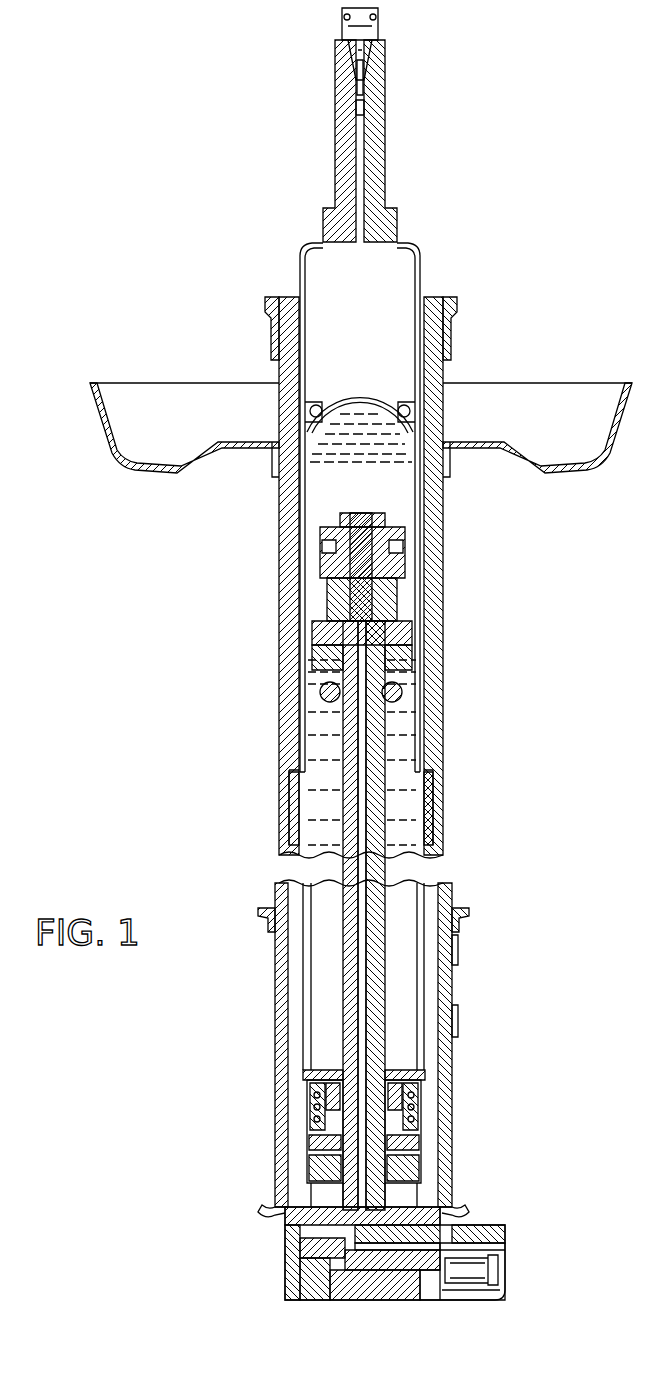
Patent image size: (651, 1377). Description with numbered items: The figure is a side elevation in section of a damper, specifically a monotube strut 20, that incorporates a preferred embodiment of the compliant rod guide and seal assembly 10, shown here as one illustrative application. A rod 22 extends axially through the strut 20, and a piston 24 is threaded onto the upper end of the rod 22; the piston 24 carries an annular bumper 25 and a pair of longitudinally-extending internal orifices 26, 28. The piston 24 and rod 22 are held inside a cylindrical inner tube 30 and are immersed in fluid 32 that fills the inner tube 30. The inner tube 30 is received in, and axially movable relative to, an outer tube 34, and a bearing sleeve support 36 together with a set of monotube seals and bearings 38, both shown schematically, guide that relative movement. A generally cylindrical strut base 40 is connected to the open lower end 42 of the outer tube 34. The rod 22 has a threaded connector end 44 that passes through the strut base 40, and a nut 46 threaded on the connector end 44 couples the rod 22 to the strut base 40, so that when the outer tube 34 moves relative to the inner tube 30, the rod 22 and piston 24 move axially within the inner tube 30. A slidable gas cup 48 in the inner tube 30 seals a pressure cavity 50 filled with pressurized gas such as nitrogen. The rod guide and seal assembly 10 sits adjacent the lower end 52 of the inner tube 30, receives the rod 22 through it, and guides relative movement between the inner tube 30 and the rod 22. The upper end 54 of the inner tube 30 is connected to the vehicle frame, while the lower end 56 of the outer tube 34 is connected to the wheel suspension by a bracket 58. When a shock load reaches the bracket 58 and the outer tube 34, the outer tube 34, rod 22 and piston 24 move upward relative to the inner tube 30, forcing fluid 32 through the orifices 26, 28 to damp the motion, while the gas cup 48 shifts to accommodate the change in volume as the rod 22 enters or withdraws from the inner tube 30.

The compliant rod guide and seal assembly 10 is at (281, 1097).
The monotube strut 20 is at (153, 700).
The rod 22 is at (350, 843).
The piston 24 is at (415, 598).
The annular bumper 25 is at (320, 692).
The internal orifice 26 is at (403, 523).
The internal orifice 28 is at (319, 523).
The inner tube 30 is at (445, 905).
The fluid 32 is at (405, 742).
The outer tube 34 is at (455, 932).
The bearing sleeve support 36 is at (436, 820).
The monotube seals and bearings 38 is at (430, 696).
The strut base 40 is at (313, 1212).
The open lower end 42 is at (427, 1196).
The threaded connector end 44 is at (407, 1255).
The nut 46 is at (332, 1245).
The gas cup 48 is at (360, 398).
The pressure cavity 50 is at (320, 256).
The lower end 52 is at (283, 1134).
The upper end 54 is at (466, 240).
The lower end 56 is at (490, 1125).
The bracket 58 is at (455, 990).